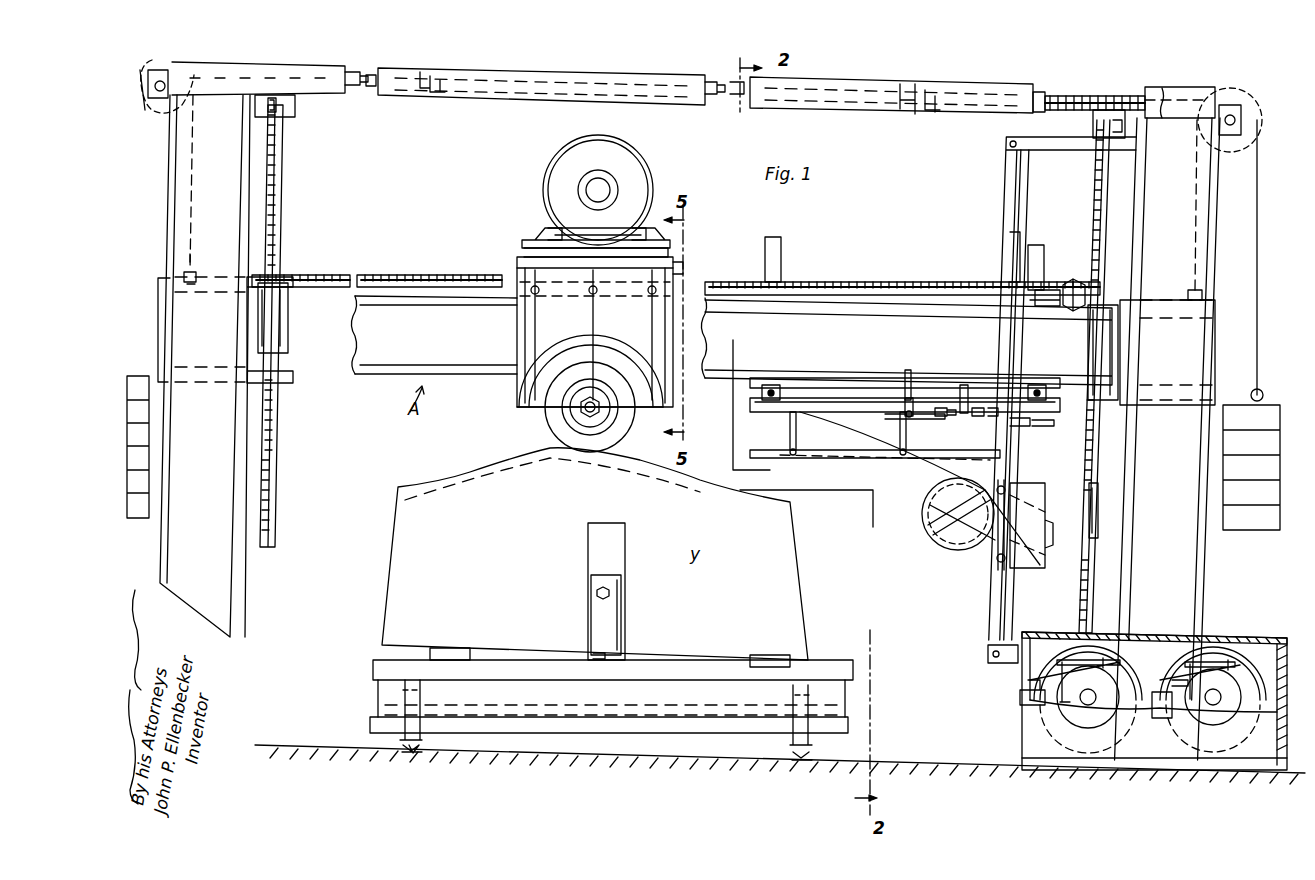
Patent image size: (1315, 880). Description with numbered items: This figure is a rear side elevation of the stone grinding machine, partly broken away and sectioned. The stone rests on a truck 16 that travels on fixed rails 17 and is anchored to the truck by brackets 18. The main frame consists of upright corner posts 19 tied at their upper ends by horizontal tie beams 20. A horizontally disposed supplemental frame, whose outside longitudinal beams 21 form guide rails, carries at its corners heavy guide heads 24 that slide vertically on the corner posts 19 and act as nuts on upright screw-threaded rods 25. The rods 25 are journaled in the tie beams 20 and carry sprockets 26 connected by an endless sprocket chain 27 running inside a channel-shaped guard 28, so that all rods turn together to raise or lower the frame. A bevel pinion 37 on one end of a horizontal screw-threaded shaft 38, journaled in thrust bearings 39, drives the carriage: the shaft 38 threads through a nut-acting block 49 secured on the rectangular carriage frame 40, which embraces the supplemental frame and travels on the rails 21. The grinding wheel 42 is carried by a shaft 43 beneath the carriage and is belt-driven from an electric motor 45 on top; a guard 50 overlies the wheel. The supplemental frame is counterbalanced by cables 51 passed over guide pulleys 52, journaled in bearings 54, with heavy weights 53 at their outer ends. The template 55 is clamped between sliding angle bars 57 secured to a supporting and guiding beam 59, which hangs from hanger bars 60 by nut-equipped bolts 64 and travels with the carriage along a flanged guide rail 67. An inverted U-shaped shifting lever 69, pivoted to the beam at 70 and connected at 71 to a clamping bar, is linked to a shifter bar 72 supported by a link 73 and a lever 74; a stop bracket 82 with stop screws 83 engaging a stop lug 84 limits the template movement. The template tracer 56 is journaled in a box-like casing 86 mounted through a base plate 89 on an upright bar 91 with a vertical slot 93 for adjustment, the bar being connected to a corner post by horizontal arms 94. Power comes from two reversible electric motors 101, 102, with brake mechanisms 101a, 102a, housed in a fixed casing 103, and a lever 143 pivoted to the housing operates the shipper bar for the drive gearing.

The truck 16 is at (668, 701).
The fixed rails 17 is at (414, 760).
The brackets 18 is at (600, 605).
The corner posts 19 is at (1208, 580).
The tie beams 20 is at (296, 106).
The longitudinal beams 21 is at (372, 376).
The guide blocks or heads 24 is at (282, 345).
The screw-threaded rods 25 is at (275, 497).
The sprockets 26 is at (1110, 96).
The endless sprocket chain 27 is at (376, 88).
The channel-shaped guard 28 is at (340, 66).
The bevel pinion 37 is at (1085, 283).
The screw-threaded shaft 38 is at (418, 275).
The thrust bearings 39 is at (1056, 292).
The carriage frame 40 is at (595, 317).
The grinding wheel 42 is at (549, 426).
The shaft 43 is at (588, 411).
The electric motor 45 is at (598, 190).
The nut-acting block 49 is at (683, 268).
The guard 50 is at (518, 403).
The cables 51 is at (198, 172).
The guide pulleys 52 is at (160, 110).
The weights 53 is at (140, 515).
The bearings 54 is at (160, 84).
The template 55 is at (925, 445).
The template tracer 56 is at (940, 530).
The angle bars 57 is at (870, 398).
The supporting and guiding beam 59 is at (843, 385).
The hanger bars 60 is at (781, 250).
The nut-equipped bolts 64 is at (771, 388).
The flanged track or guide rail 67 is at (975, 272).
The shifting lever 69 is at (915, 395).
The pivot 70 is at (908, 372).
The pivotal connection 71 is at (906, 420).
The shifter bar 72 is at (846, 458).
The link 73 is at (790, 438).
The lever 74 is at (1025, 440).
The stop bracket 82 is at (938, 418).
The stop screws 83 is at (980, 406).
The stop lug 84 is at (966, 385).
The box-like casing 86 is at (928, 510).
The base plate 89 is at (1045, 496).
The upright bar 91 is at (1025, 207).
The vertical slot 93 is at (997, 580).
The horizontal arms or bars 94 is at (1054, 165).
The reversible electric motor 101 is at (1070, 650).
The brake mechanism 101a is at (1020, 695).
The reversible electric motor 102 is at (1212, 652).
The brake mechanism 102a is at (1245, 660).
The casing 103 is at (1172, 625).
The lever 143 is at (1100, 547).